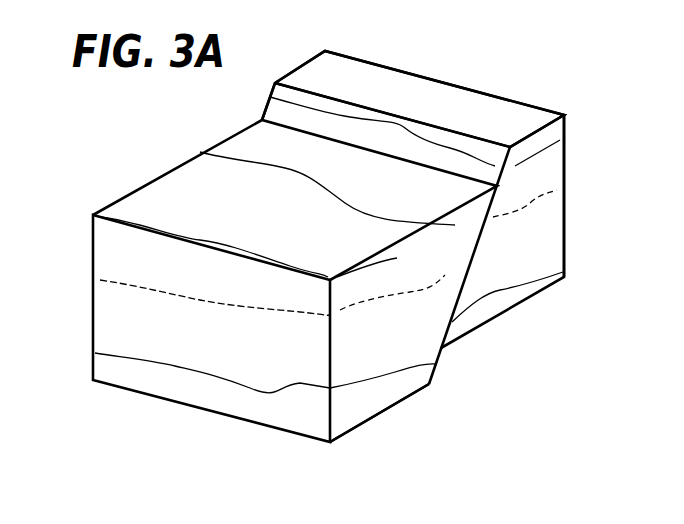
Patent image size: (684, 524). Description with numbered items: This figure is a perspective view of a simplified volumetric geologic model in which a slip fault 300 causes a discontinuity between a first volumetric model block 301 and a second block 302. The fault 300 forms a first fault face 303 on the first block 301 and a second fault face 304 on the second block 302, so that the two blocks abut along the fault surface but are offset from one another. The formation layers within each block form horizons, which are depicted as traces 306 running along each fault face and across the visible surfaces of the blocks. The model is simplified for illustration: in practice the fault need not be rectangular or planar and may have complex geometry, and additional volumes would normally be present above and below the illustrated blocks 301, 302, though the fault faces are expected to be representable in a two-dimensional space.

The slip fault 300 is at (397, 258).
The first volumetric model block 301 is at (368, 421).
The second block 302 is at (566, 281).
The first fault face 303 is at (449, 364).
The second fault face 304 is at (258, 112).
The traces 306 is at (483, 163).